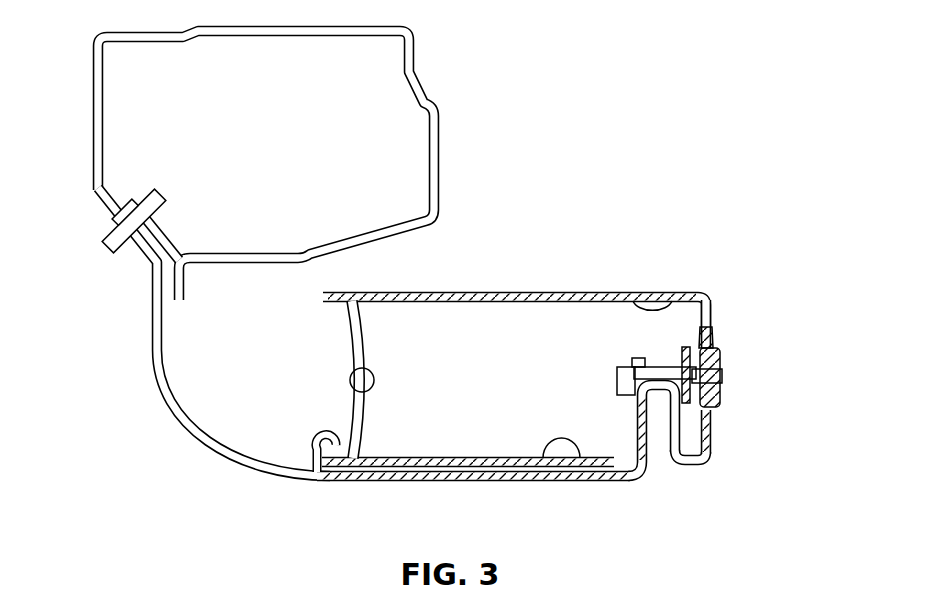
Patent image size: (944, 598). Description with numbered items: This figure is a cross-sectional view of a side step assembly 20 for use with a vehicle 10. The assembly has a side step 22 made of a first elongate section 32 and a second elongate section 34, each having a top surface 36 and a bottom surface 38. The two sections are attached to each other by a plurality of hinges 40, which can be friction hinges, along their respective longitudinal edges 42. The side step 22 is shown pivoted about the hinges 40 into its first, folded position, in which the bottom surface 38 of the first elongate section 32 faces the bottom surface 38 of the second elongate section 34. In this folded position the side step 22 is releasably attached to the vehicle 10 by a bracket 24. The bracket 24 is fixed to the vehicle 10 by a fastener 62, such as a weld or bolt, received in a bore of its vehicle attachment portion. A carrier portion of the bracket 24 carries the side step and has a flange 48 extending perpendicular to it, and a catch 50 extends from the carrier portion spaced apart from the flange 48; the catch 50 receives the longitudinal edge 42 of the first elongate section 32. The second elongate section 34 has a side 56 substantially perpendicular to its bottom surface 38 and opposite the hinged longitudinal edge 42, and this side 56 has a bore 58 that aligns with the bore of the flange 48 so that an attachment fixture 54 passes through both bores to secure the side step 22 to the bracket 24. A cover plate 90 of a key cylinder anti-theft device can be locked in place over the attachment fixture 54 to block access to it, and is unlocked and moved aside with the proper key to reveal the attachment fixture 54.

The vehicle 10 is at (383, 60).
The side step assembly 20 is at (198, 477).
The side step 22 is at (703, 347).
The bracket 24 is at (170, 396).
The first elongate section 32 is at (428, 462).
The second elongate section 34 is at (474, 297).
The top surface 36 is at (548, 290).
The bottom surface 38 is at (668, 312).
The hinge 40 is at (364, 381).
The longitudinal edge 42 is at (323, 297).
The flange 48 is at (663, 432).
The catch 50 is at (675, 465).
The attachment fixture 54 is at (694, 380).
The side 56 is at (710, 436).
The bore 58 is at (687, 320).
The fastener 62 is at (122, 240).
The cover plate 90 is at (723, 367).